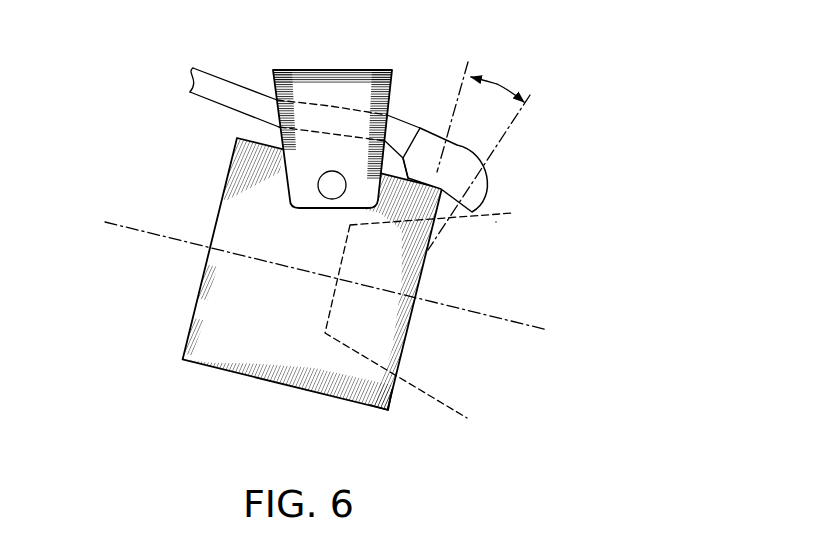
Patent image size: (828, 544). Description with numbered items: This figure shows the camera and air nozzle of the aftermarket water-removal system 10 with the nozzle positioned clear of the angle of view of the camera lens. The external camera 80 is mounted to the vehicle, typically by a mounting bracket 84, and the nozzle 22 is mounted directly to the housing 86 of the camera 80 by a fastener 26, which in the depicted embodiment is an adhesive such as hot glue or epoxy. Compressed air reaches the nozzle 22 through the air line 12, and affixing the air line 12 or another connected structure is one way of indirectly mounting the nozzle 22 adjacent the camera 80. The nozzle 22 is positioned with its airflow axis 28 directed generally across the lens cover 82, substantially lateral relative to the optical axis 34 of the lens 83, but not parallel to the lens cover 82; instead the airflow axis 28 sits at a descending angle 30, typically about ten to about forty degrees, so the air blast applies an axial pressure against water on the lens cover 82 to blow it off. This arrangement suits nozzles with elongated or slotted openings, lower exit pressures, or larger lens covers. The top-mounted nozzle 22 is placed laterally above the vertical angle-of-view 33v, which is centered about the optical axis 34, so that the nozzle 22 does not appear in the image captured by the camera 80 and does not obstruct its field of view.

The water-removal system 10 is at (183, 77).
The air line 12 is at (217, 107).
The nozzle 22 is at (488, 208).
The fastener 26 is at (404, 168).
The airflow axis 28 is at (508, 133).
The descending angle 30 is at (480, 114).
The vertical angle-of-view 33v is at (498, 224).
The optical axis 34 is at (514, 316).
The external camera 80 is at (220, 372).
The lens cover 82 is at (423, 275).
The lens 83 is at (332, 317).
The mounting bracket 84 is at (394, 84).
The housing 86 is at (390, 410).